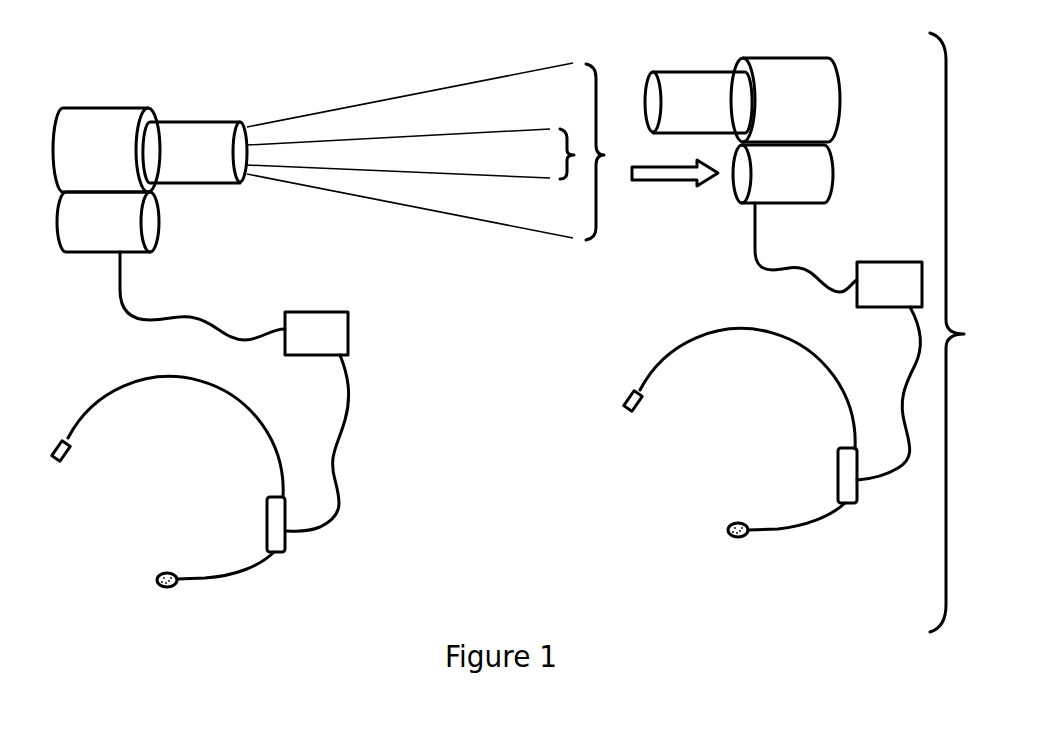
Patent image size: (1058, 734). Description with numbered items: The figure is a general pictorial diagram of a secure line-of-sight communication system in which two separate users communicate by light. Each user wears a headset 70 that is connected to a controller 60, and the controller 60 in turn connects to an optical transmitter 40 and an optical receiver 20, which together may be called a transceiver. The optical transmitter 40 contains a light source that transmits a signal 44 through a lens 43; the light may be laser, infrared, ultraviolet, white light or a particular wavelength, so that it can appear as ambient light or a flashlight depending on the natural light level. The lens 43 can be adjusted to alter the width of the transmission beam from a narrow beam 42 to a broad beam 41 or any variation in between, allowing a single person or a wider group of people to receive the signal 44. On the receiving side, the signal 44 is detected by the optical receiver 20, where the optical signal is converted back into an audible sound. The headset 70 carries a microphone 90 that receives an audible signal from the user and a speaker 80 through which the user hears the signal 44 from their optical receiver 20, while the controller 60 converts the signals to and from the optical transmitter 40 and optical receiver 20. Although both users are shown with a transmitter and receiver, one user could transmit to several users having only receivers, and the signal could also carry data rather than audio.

The optical receiver 20 is at (102, 253).
The optical transmitter 40 is at (125, 107).
The broad beam 41 is at (373, 102).
The narrow beam 42 is at (380, 173).
The lens 43 is at (243, 127).
The signal 44 is at (680, 181).
The controller 60 is at (318, 310).
The headset 70 is at (118, 385).
The speaker 80 is at (285, 542).
The microphone 90 is at (158, 573).